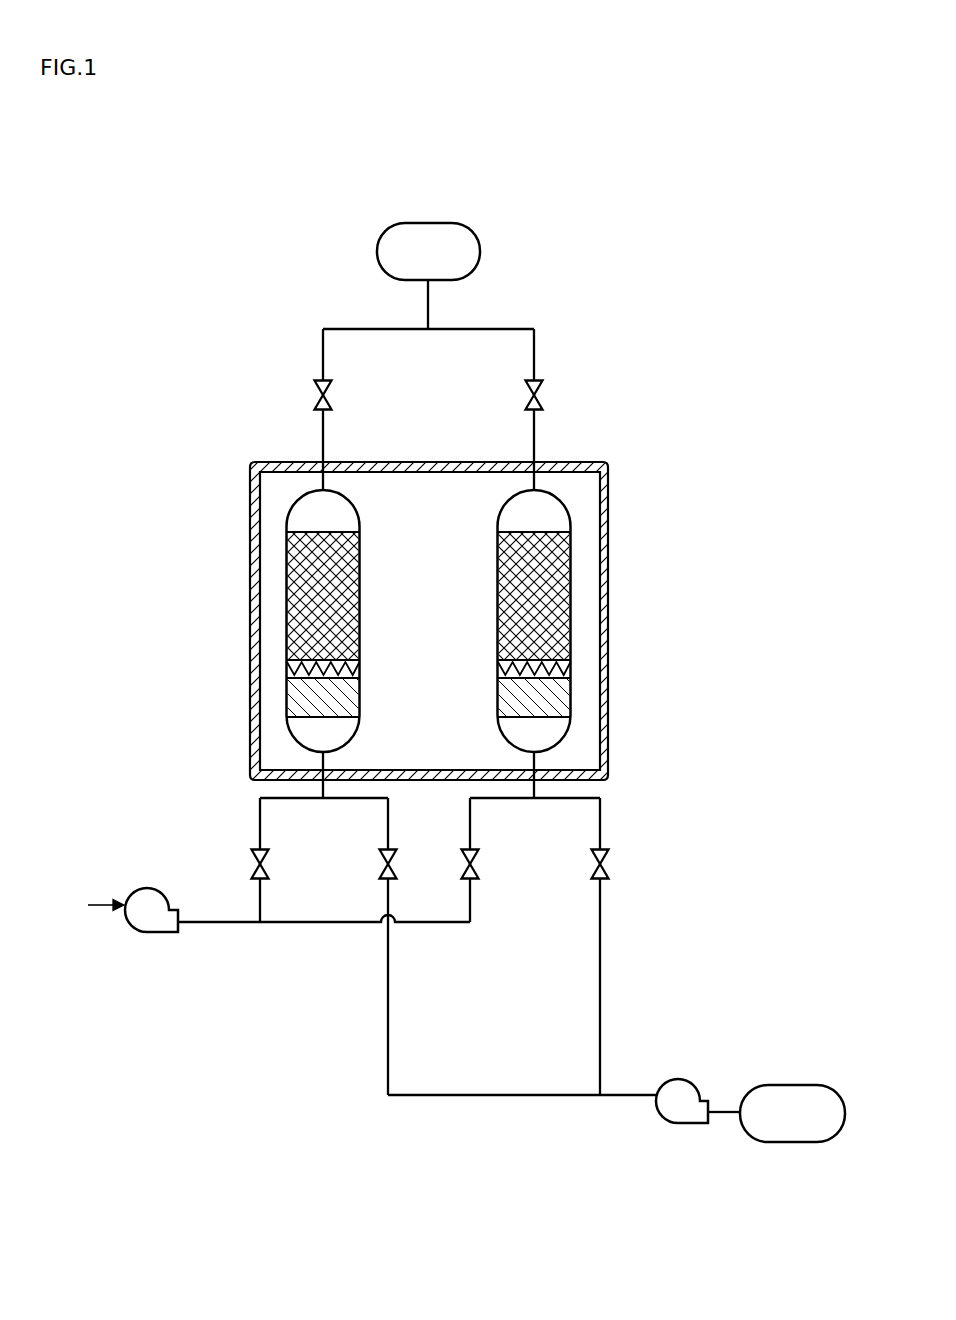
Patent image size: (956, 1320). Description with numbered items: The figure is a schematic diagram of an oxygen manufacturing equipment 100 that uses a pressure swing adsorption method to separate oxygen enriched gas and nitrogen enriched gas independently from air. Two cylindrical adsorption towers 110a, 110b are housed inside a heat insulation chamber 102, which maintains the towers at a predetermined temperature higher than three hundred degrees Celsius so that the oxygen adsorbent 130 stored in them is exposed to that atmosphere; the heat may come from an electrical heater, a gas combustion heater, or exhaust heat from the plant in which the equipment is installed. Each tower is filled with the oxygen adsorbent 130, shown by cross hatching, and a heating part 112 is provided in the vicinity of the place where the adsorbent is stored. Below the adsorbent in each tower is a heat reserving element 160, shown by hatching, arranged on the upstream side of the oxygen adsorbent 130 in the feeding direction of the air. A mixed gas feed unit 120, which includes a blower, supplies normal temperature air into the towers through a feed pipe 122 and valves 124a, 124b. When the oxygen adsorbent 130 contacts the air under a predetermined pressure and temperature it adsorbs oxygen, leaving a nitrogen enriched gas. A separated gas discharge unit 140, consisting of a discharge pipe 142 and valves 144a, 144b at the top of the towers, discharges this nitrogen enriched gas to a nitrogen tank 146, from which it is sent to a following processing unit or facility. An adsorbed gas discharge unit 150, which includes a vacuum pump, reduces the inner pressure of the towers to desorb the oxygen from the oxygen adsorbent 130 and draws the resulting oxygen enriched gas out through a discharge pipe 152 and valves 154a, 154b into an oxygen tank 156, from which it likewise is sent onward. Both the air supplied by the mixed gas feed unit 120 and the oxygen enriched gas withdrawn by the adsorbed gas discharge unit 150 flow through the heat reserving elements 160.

The oxygen manufacturing equipment 100 is at (142, 164).
The heat insulation chamber 102 is at (428, 461).
The adsorption tower 110a is at (384, 516).
The adsorption tower 110b is at (500, 523).
The heating part 112 is at (362, 668).
The mixed gas feed unit 120 is at (146, 891).
The feed pipe 122 is at (183, 933).
The valve 124a is at (264, 851).
The valve 124b is at (474, 851).
The oxygen adsorbent 130 is at (303, 604).
The separated gas discharge unit 140 is at (212, 312).
The discharge pipe 142 is at (354, 328).
The valve 144a is at (318, 384).
The valve 144b is at (539, 384).
The nitrogen tank 146 is at (408, 263).
The adsorbed gas discharge unit 150 is at (676, 1080).
The discharge pipe 152 is at (562, 1097).
The valve 154a is at (392, 851).
The valve 154b is at (604, 851).
The oxygen tank 156 is at (772, 1127).
The heat reserving element 160 is at (303, 712).